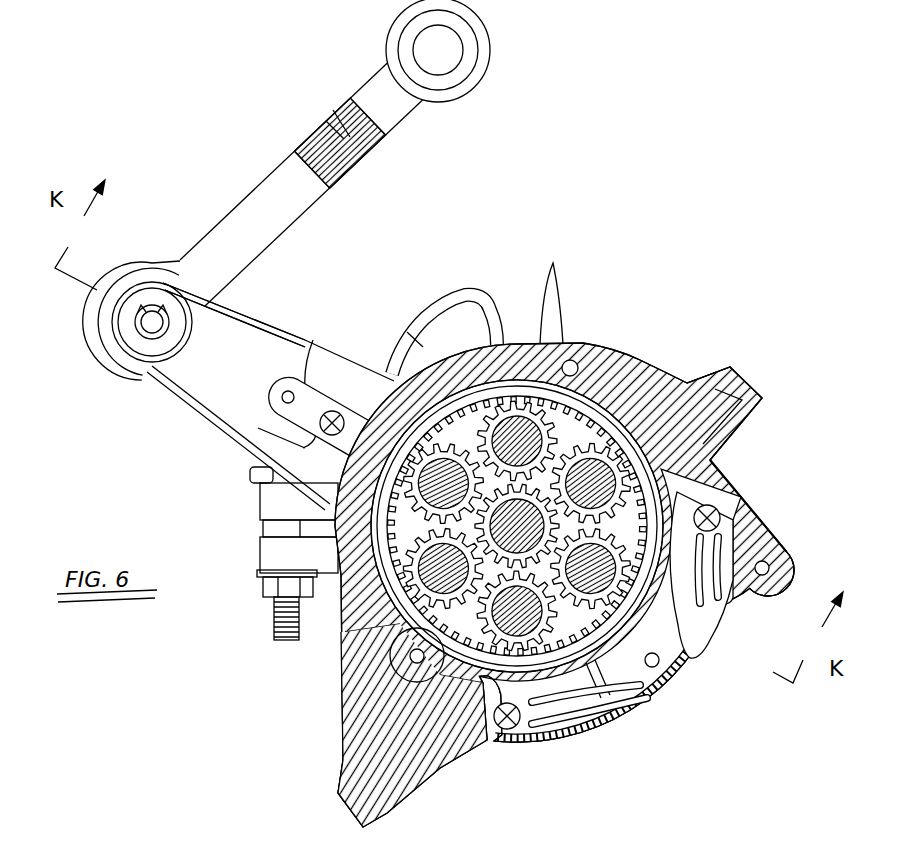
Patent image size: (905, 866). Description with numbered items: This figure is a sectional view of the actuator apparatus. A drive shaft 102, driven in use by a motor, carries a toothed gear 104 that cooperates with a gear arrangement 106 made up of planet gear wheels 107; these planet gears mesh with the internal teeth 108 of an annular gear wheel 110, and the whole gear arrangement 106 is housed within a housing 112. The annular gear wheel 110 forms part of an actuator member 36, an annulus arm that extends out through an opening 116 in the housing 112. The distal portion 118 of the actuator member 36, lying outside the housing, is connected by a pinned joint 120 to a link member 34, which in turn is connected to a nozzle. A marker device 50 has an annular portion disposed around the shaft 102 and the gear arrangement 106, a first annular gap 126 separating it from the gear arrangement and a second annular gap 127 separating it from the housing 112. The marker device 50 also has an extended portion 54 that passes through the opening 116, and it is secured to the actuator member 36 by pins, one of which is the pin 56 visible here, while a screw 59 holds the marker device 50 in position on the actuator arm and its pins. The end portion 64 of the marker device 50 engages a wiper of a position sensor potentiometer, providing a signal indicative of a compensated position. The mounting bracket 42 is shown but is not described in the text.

The link member 34 is at (343, 113).
The actuator member 36 is at (337, 360).
The mounting bracket 42 is at (762, 560).
The marker device 50 is at (313, 340).
The extended portion 54 is at (313, 340).
The pin 56 is at (257, 393).
The screw 59 is at (240, 443).
The end portion 64 is at (715, 603).
The drive shaft 102 is at (520, 527).
The toothed gear 104 is at (567, 625).
The gear arrangement 106 is at (517, 668).
The planet gear wheels 107 is at (552, 275).
The internal teeth 108 is at (350, 633).
The annular gear wheel 110 is at (473, 296).
The housing 112 is at (693, 405).
The opening 116 is at (384, 397).
The distal portion 118 is at (167, 363).
The pinned joint 120 is at (152, 322).
The first annular gap 126 is at (720, 512).
The second annular gap 127 is at (707, 463).